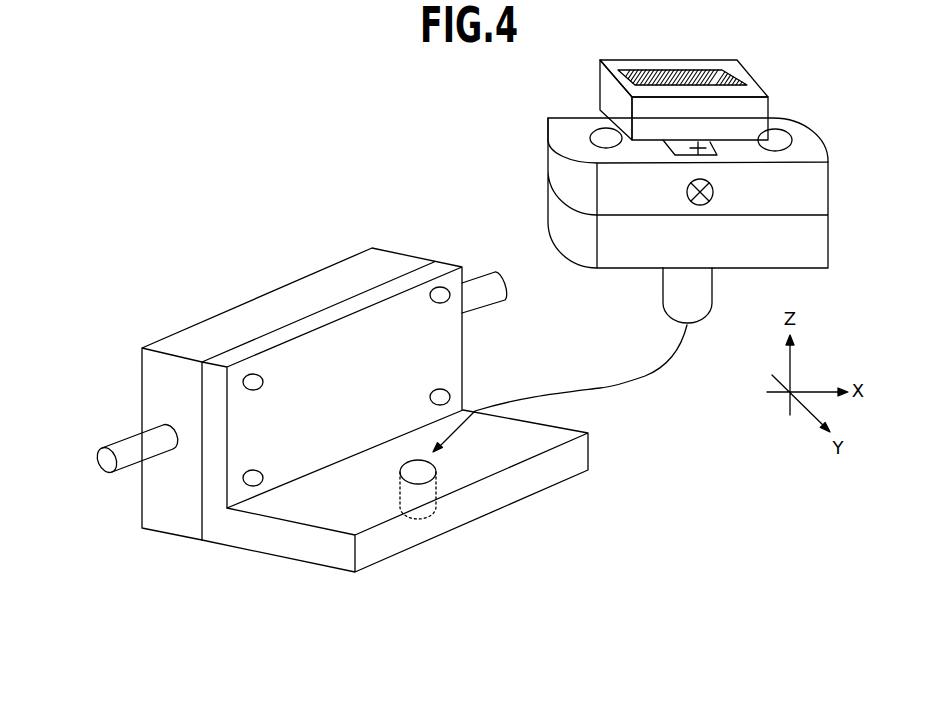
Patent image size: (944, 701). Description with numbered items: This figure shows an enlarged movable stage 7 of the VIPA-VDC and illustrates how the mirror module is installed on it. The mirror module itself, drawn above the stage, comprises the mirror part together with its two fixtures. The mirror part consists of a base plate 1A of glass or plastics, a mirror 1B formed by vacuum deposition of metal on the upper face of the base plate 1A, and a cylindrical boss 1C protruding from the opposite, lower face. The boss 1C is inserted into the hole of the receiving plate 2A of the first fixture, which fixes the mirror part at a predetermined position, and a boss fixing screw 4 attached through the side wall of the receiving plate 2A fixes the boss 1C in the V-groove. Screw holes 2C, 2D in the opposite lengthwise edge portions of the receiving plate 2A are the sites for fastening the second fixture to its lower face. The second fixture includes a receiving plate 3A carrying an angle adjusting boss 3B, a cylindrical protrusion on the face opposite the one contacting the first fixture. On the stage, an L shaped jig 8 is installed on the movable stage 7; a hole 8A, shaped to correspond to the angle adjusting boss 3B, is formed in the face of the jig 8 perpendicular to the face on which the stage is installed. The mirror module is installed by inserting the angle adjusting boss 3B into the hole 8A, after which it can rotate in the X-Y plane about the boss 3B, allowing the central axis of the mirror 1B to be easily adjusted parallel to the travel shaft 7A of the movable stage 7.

The base plate 1A is at (599, 88).
The mirror 1B is at (724, 63).
The boss 1C is at (727, 142).
The receiving plate 2A is at (548, 147).
The screw hole 2C is at (605, 133).
The screw hole 2D is at (775, 130).
The receiving plate 3A is at (548, 197).
The angle adjusting boss 3B is at (658, 294).
The boss fixing screw 4 is at (716, 194).
The movable stage 7 is at (232, 320).
The travel shaft 7A is at (130, 443).
The L shaped jig 8 is at (237, 535).
The hole 8A is at (412, 468).